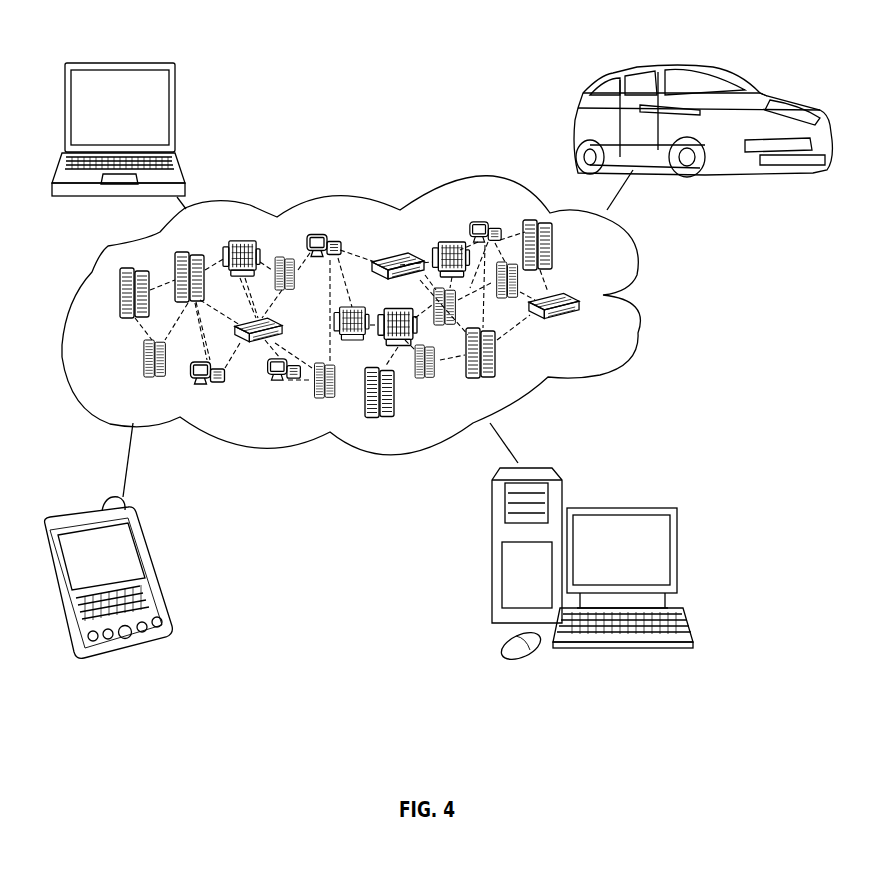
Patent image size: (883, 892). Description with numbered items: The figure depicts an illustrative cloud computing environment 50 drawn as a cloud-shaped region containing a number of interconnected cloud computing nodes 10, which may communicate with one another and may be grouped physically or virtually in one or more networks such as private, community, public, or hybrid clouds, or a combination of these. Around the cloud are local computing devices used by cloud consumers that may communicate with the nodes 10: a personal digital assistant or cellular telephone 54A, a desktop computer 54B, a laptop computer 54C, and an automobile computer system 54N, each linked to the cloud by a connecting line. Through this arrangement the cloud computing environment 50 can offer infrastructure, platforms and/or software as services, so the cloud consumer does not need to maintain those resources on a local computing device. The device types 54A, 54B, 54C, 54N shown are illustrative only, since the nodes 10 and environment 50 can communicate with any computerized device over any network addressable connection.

The cloud computing node 10 is at (593, 338).
The cloud computing environment 50 is at (640, 253).
The personal digital assistant or cellular telephone 54A is at (148, 550).
The desktop computer 54B is at (677, 550).
The laptop computer 54C is at (176, 110).
The automobile computer system 54N is at (733, 82).